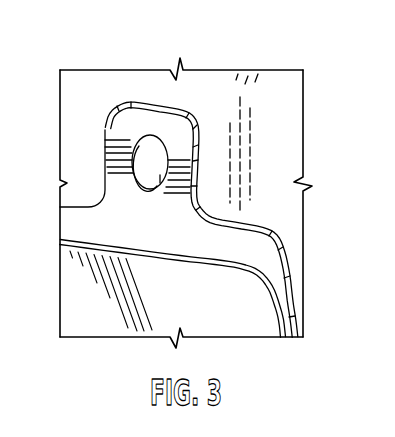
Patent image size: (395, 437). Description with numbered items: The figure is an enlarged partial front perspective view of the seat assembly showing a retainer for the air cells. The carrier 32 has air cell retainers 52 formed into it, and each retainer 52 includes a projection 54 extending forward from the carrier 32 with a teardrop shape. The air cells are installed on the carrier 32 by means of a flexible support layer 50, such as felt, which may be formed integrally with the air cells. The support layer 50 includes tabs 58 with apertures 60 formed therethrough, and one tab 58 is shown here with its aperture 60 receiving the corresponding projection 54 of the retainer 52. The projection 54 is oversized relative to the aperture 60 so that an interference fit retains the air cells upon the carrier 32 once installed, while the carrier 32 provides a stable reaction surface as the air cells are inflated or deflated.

The carrier 32 is at (267, 139).
The flexible support layer 50 is at (265, 252).
The air cell retainer 52 is at (161, 140).
The projection 54 is at (130, 143).
The tab 58 is at (110, 118).
The aperture 60 is at (152, 178).